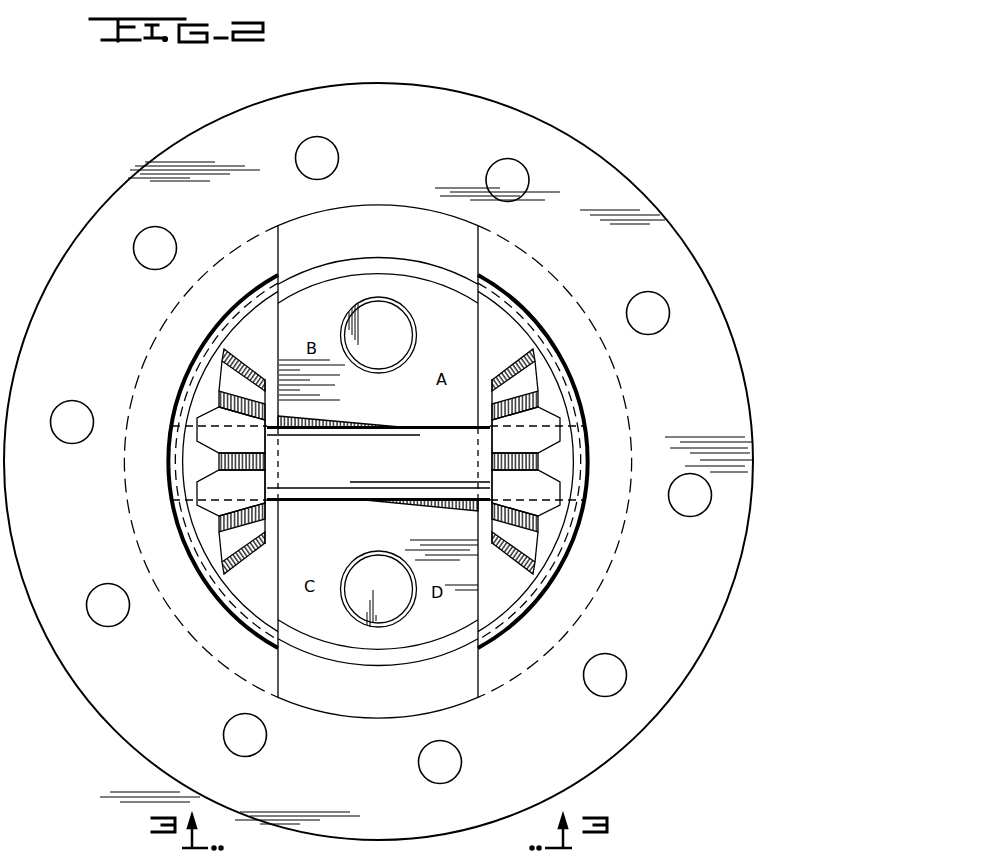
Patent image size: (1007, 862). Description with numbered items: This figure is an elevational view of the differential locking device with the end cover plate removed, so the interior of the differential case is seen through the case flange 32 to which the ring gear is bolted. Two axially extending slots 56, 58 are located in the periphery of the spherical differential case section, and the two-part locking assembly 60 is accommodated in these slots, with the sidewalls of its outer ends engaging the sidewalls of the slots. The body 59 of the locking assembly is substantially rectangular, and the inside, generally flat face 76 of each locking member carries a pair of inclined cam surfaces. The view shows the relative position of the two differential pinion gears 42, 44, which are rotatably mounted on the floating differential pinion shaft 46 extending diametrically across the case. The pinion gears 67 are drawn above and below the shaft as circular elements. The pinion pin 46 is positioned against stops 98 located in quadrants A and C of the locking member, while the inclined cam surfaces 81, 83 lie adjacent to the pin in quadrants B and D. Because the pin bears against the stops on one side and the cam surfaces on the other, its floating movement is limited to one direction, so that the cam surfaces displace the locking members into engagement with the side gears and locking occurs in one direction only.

The differential case flange 32 is at (662, 704).
The differential pinion gear 42 is at (195, 470).
The differential pinion gear 44 is at (552, 398).
The floating differential pinion shaft 46 is at (392, 474).
The axial slot 56 is at (281, 245).
The axial slot 58 is at (478, 670).
The body of the locking assembly 59 is at (326, 538).
The locking assembly 60 is at (385, 270).
The pinion gear 67 is at (392, 327).
The inside flat face of locking member 76 is at (412, 411).
The inclined cam surface 81 is at (302, 414).
The inclined cam surface 83 is at (418, 510).
The stop 98 is at (436, 432).